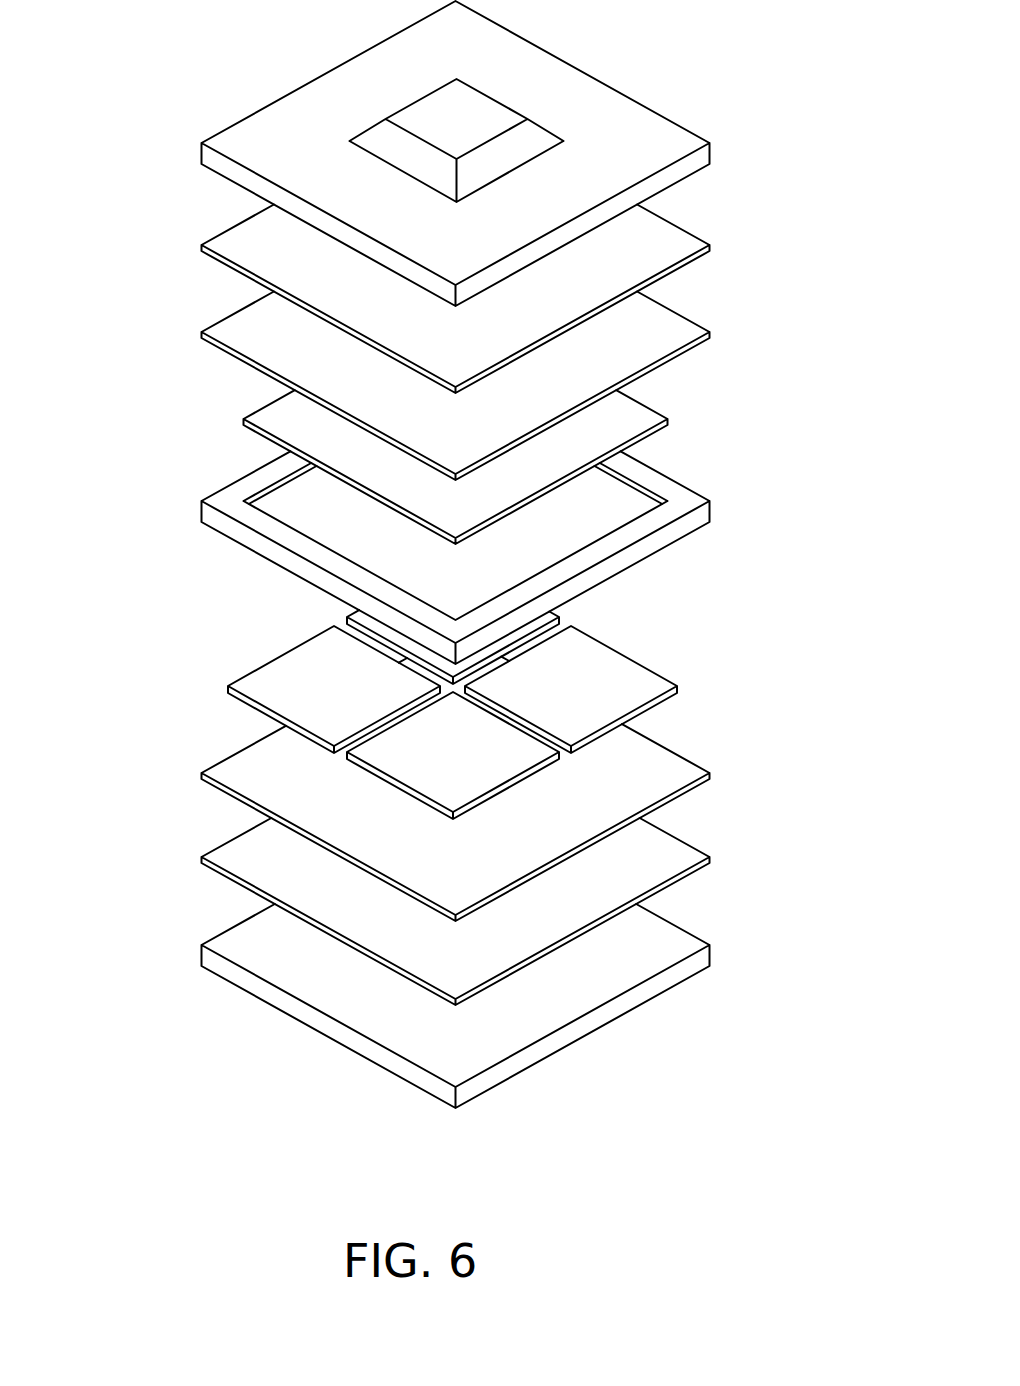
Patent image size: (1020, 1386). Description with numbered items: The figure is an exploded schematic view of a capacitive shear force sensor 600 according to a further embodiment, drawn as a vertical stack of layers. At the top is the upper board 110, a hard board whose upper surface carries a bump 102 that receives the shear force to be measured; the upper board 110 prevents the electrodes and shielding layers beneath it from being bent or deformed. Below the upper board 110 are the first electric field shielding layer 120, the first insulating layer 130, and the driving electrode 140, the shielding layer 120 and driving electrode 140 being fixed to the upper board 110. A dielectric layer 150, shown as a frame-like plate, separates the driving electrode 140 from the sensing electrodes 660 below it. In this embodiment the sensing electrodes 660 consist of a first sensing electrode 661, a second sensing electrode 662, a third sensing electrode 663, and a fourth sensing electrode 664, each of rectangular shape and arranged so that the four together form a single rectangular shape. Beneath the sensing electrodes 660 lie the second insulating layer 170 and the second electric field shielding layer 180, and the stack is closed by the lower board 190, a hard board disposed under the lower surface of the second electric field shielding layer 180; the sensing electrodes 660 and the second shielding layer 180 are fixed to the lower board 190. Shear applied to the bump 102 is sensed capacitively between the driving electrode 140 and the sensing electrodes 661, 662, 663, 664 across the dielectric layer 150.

The capacitive shear force sensor 600 is at (395, 607).
The bump 102 is at (348, 130).
The upper board 110 is at (380, 153).
The first electric field shielding layer 120 is at (186, 250).
The first insulating layer 130 is at (185, 337).
The driving electrode 140 is at (228, 424).
The dielectric layer 150 is at (185, 506).
The sensing electrodes 660 is at (395, 701).
The first sensing electrode 661 is at (283, 670).
The second sensing electrode 662 is at (635, 682).
The third sensing electrode 663 is at (422, 772).
The fourth sensing electrode 664 is at (559, 618).
The second insulating layer 170 is at (184, 778).
The second electric field shielding layer 180 is at (184, 862).
The lower board 190 is at (184, 962).